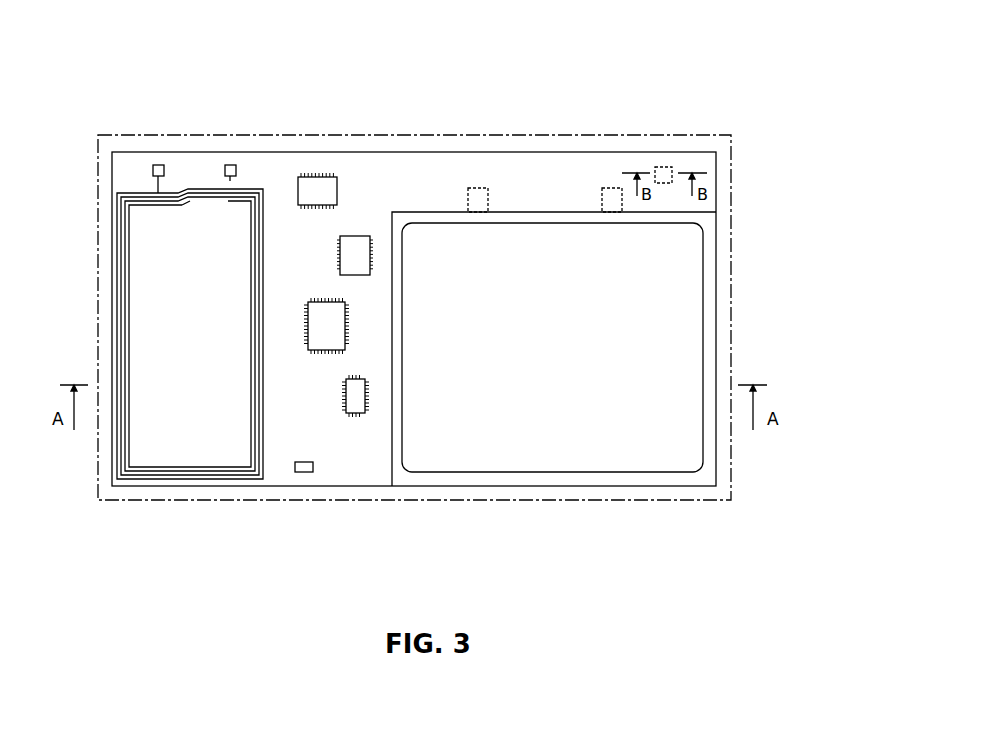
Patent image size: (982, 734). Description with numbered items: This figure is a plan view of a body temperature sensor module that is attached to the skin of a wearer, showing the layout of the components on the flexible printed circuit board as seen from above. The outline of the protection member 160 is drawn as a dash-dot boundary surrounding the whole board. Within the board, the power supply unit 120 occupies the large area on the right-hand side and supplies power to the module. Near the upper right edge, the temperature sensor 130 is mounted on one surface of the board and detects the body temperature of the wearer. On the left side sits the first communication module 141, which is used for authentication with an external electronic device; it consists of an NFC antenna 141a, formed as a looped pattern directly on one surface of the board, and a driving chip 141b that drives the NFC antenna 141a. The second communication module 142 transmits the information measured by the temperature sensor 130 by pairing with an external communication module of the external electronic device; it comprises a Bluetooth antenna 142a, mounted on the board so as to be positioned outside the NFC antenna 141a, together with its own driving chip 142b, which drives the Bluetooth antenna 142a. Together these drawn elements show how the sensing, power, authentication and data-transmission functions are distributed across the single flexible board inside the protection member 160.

The power supply unit 120 is at (675, 279).
The temperature sensor 130 is at (664, 167).
The first communication module 141 is at (328, 67).
The NFC antenna 141a is at (205, 190).
The driving chip 141b is at (318, 177).
The second communication module 142 is at (352, 570).
The Bluetooth antenna 142a is at (306, 472).
The driving chip 142b is at (357, 403).
The protection member 160 is at (488, 135).